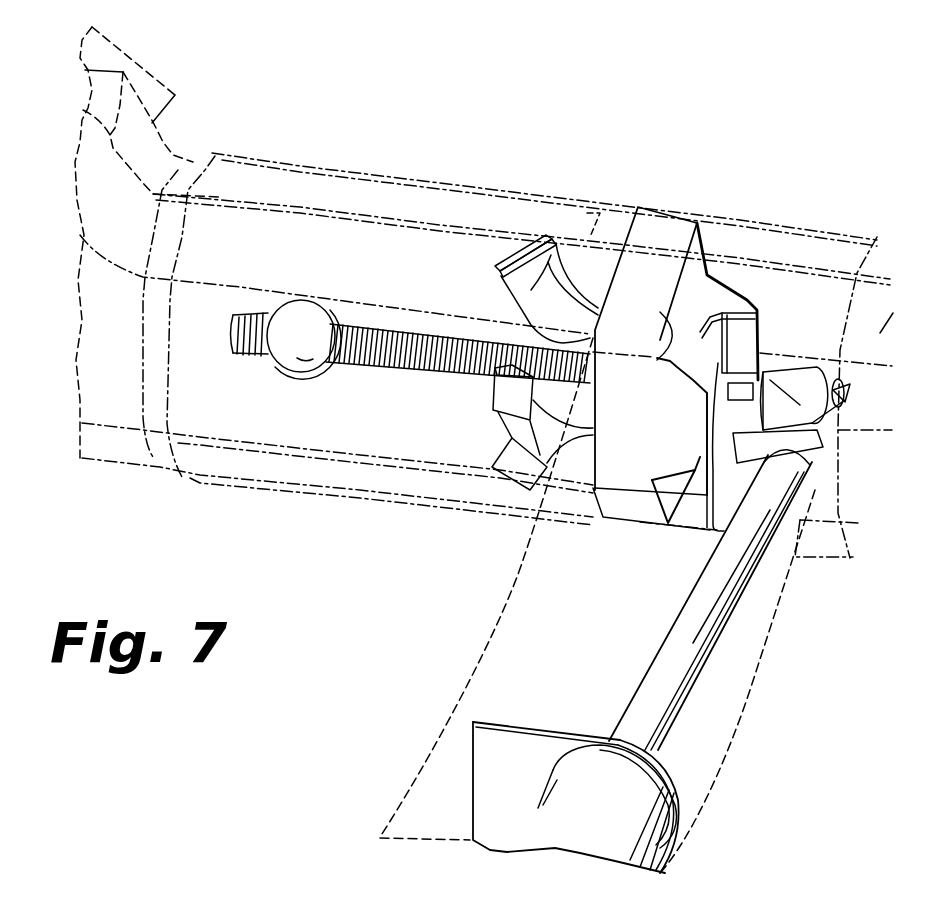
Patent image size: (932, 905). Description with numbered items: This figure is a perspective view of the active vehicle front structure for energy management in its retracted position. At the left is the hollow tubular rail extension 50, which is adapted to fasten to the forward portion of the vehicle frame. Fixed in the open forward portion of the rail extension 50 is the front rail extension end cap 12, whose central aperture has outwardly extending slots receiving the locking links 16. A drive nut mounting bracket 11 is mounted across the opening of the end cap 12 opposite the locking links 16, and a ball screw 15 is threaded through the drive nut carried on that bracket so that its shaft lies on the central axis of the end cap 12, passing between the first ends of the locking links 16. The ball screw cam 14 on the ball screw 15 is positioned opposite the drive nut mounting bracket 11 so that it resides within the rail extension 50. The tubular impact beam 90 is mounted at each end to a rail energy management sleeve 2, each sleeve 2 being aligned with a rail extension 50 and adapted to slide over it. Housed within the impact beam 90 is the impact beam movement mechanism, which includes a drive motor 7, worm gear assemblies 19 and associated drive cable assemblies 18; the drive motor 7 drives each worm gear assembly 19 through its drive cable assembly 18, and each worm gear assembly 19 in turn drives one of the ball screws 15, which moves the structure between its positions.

The rail energy management sleeve 2 is at (850, 560).
The drive motor 7 is at (632, 808).
The drive nut mounting bracket 11 is at (735, 327).
The front rail extension end cap 12 is at (636, 307).
The ball screw cam 14 is at (298, 320).
The ball screw 15 is at (430, 333).
The locking links 16 is at (553, 262).
The drive cable assembly 18 is at (683, 668).
The worm gear assembly 19 is at (793, 385).
The rail extension 50 is at (178, 170).
The impact beam 90 is at (532, 648).